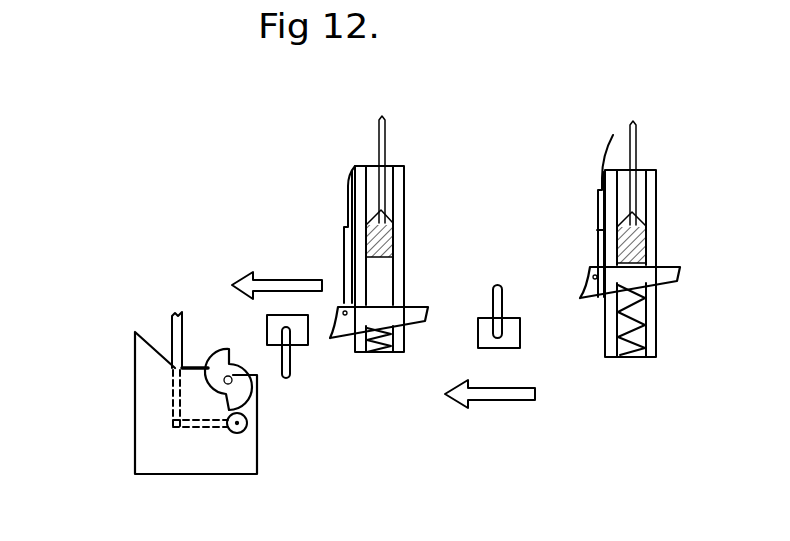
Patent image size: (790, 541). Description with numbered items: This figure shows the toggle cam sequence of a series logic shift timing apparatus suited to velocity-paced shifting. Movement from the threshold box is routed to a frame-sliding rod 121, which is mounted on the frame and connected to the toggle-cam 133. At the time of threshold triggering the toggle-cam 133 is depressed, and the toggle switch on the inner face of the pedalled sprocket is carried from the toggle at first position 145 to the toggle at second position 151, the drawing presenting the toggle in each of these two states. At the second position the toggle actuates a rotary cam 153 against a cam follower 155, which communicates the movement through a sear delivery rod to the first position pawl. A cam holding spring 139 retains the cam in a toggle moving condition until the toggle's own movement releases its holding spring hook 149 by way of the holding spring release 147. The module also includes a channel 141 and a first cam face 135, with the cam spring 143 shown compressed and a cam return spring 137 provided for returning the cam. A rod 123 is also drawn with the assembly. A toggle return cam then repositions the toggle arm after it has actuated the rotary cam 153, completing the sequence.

The frame-sliding rod 121 is at (160, 346).
The rod 123 is at (646, 130).
The toggle-cam 133 is at (653, 225).
The first cam face 135 is at (678, 291).
The cam return spring 137 is at (652, 352).
The cam holding spring 139 is at (636, 290).
The channel 141 is at (588, 184).
The cam spring, compressed 143 is at (394, 363).
The toggle at first position 145 is at (482, 273).
The holding spring release 147 is at (338, 348).
The holding spring hook 149 is at (333, 222).
The toggle at second position 151 is at (265, 354).
The rotary cam 153 is at (220, 341).
The cam follower 155 is at (216, 441).